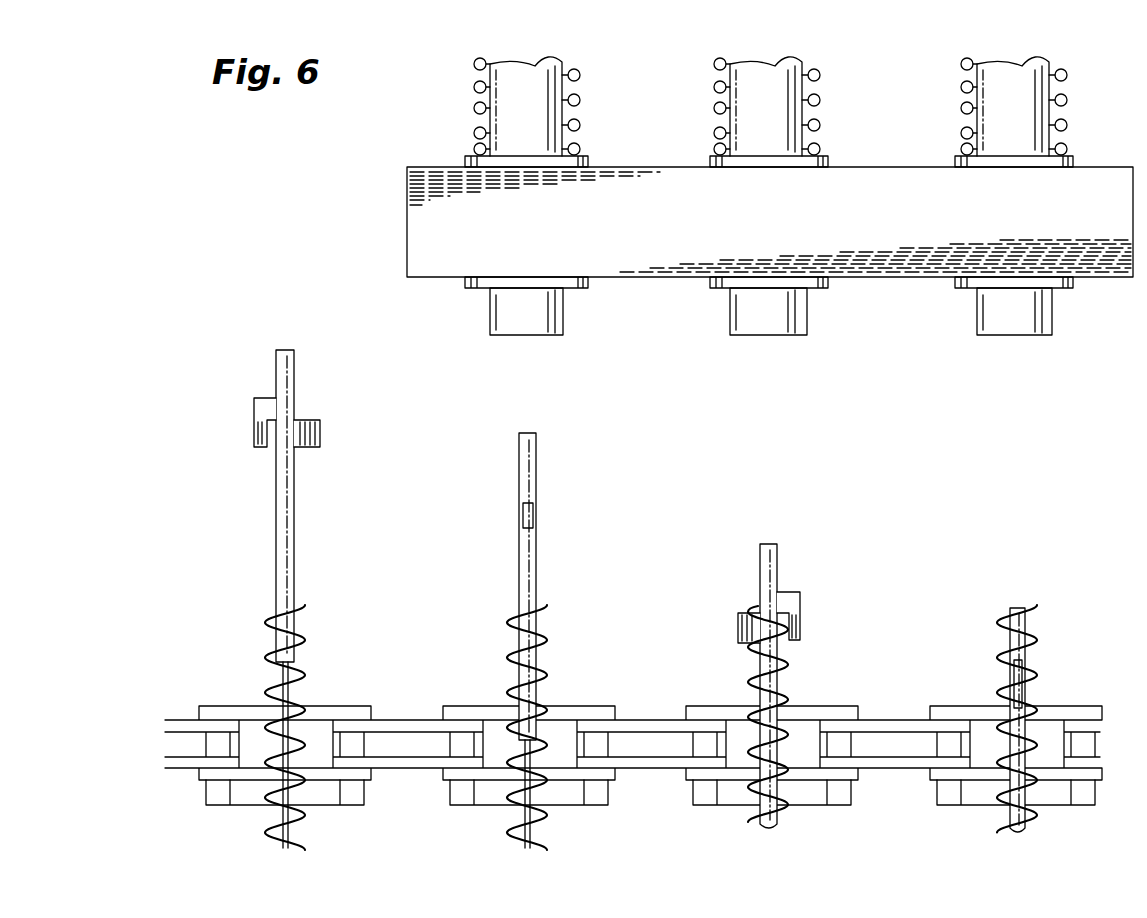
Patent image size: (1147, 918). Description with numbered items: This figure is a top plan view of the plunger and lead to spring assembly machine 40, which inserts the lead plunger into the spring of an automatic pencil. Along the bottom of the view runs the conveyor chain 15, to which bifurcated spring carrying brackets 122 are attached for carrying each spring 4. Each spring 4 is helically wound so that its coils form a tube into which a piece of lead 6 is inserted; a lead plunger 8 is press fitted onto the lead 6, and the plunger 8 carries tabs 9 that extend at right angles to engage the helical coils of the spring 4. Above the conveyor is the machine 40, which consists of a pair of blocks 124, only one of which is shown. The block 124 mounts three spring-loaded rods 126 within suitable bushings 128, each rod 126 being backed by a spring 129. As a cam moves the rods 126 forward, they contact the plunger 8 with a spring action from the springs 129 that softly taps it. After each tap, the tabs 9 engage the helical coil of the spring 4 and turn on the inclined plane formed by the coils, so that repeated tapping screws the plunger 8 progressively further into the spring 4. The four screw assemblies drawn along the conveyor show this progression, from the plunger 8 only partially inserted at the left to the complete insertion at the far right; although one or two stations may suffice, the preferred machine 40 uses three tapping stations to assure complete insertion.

The plunger and lead to spring assembly machine 40 is at (437, 141).
The block 124 is at (746, 229).
The spring-loaded rod 126 is at (985, 313).
The bushing 128 is at (715, 287).
The spring 129 is at (715, 112).
The lead plunger 8 is at (284, 502).
The tab 9 is at (256, 421).
The spring 4 is at (270, 658).
The lead 6 is at (283, 812).
The conveyor chain 15 is at (346, 706).
The bifurcated spring carrying bracket 122 is at (918, 814).